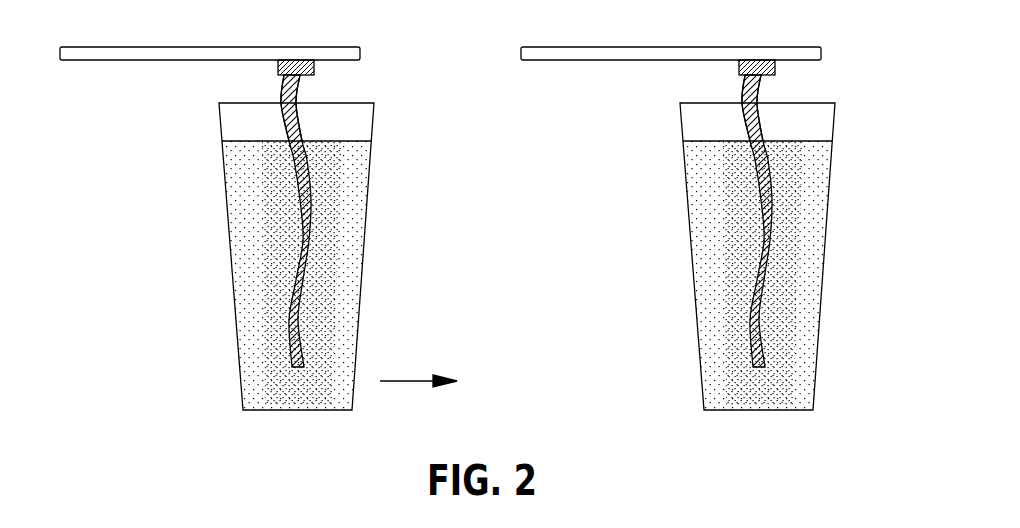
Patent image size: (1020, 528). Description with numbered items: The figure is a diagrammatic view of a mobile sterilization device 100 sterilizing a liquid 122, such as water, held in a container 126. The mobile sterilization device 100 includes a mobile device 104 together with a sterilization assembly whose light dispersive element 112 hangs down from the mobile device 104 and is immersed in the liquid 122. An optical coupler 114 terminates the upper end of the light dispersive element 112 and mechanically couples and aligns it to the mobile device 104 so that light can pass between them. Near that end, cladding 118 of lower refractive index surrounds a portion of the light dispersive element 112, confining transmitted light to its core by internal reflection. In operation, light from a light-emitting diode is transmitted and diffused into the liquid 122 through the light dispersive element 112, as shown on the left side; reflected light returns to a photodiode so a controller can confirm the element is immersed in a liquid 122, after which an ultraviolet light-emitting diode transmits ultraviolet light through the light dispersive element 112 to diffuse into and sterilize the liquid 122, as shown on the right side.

The mobile sterilization device 100 is at (196, 326).
The mobile device 104 is at (212, 53).
The light dispersive element 112 is at (300, 218).
The optical coupler 114 is at (315, 67).
The cladding 118 is at (283, 96).
The liquid 122 is at (350, 200).
The container 126 is at (362, 278).